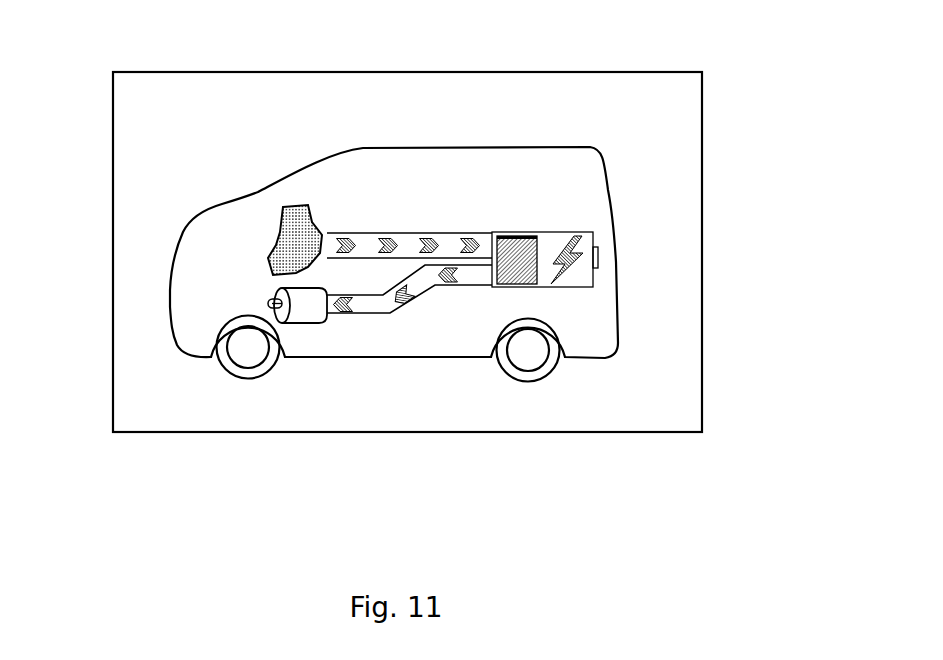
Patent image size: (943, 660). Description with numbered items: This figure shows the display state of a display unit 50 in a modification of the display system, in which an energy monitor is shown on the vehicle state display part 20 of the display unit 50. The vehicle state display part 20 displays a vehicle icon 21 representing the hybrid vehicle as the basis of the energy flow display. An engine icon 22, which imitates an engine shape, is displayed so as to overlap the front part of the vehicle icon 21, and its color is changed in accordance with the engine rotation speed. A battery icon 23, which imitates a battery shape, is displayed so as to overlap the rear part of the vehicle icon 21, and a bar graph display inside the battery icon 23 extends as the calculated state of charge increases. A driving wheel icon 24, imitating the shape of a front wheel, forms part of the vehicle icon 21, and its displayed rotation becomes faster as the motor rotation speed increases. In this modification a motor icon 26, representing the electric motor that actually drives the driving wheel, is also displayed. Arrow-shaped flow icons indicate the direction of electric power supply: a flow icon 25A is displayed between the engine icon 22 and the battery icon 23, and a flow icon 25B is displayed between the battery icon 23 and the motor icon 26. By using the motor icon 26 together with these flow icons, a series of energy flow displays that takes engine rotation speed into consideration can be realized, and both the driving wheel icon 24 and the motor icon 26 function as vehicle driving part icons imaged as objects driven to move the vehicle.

The display unit 50 is at (652, 62).
The vehicle state display part 20 is at (375, 72).
The vehicle icon 21 is at (533, 147).
The engine icon 22 is at (283, 207).
The battery icon 23 is at (583, 279).
The driving wheel icon 24 is at (250, 347).
The flow icon 25A is at (430, 253).
The flow icon 25B is at (345, 313).
The motor icon 26 is at (305, 310).